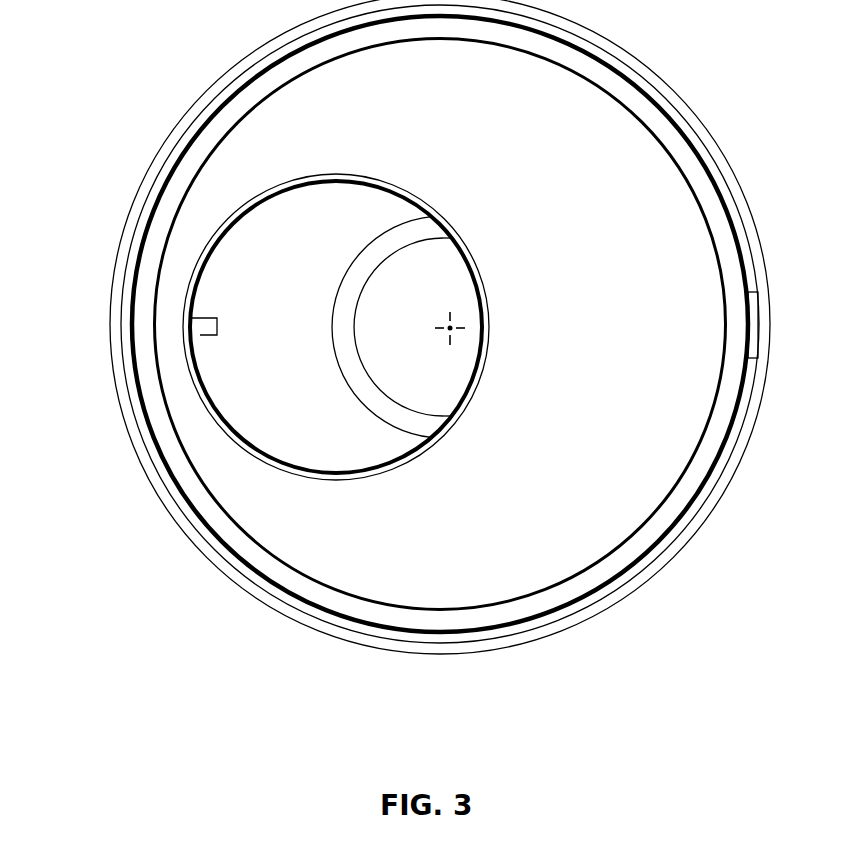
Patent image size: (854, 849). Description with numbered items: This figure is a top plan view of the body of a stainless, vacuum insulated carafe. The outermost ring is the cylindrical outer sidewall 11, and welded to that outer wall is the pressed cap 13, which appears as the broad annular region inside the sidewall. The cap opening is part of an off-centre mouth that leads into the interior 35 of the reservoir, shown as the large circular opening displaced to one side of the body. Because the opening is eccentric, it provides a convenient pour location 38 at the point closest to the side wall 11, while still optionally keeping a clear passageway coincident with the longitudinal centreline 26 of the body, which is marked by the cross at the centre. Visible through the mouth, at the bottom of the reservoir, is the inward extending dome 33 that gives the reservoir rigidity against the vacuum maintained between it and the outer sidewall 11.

The outer sidewall 11 is at (441, 327).
The pressed cap 13 is at (477, 324).
The longitudinal centreline 26 is at (599, 457).
The inward extending dome 33 is at (437, 303).
The interior of the reservoir 35 is at (293, 290).
The pour location 38 is at (117, 390).